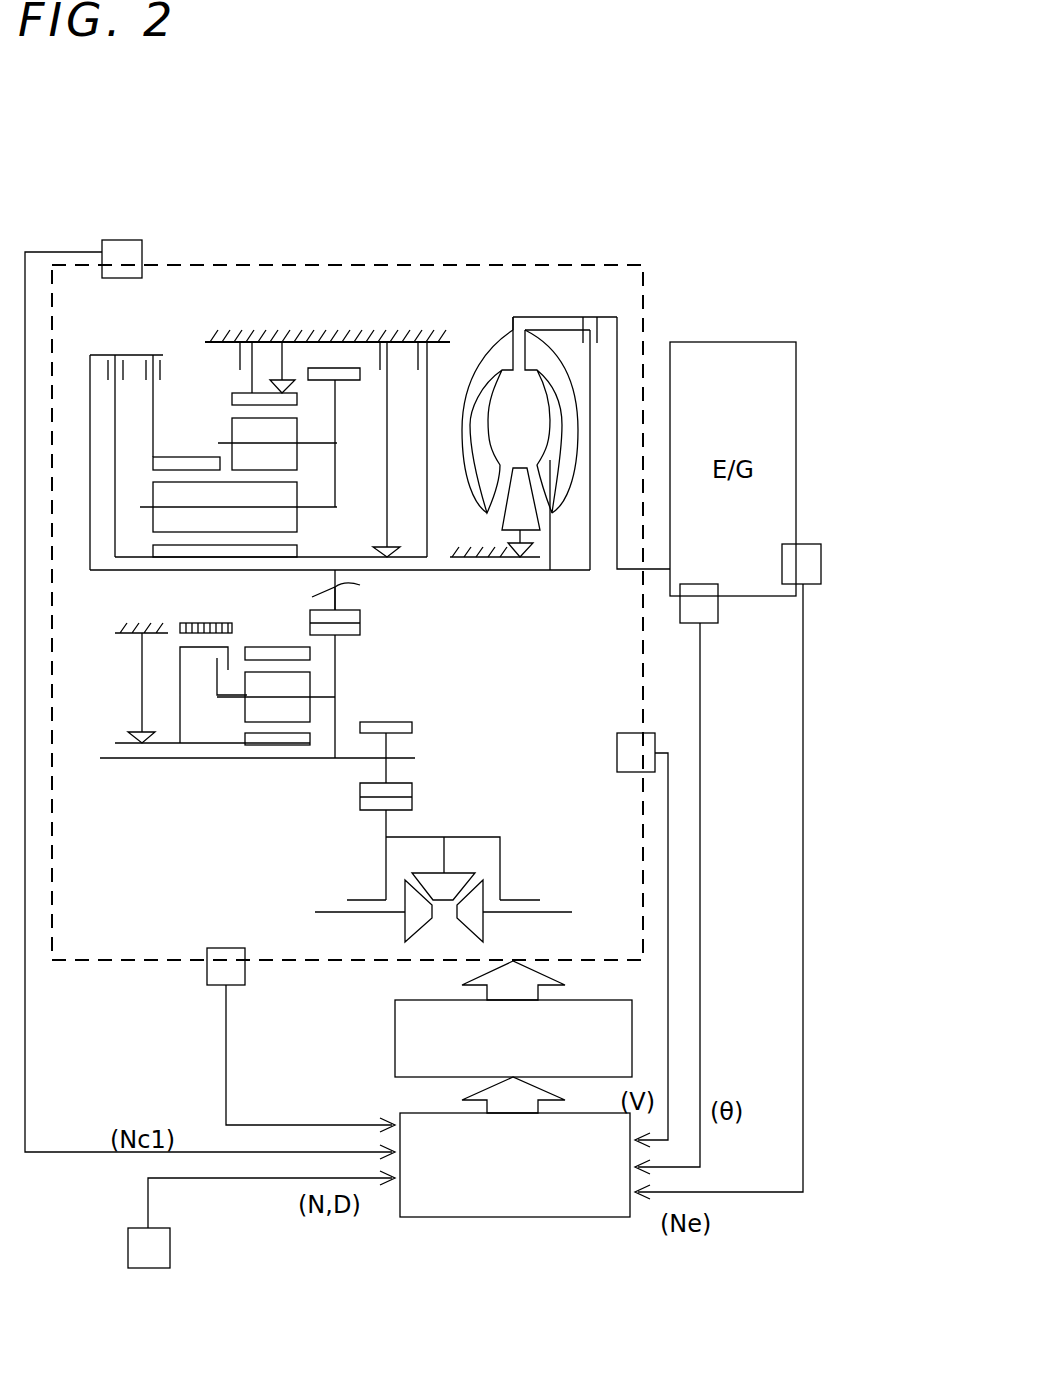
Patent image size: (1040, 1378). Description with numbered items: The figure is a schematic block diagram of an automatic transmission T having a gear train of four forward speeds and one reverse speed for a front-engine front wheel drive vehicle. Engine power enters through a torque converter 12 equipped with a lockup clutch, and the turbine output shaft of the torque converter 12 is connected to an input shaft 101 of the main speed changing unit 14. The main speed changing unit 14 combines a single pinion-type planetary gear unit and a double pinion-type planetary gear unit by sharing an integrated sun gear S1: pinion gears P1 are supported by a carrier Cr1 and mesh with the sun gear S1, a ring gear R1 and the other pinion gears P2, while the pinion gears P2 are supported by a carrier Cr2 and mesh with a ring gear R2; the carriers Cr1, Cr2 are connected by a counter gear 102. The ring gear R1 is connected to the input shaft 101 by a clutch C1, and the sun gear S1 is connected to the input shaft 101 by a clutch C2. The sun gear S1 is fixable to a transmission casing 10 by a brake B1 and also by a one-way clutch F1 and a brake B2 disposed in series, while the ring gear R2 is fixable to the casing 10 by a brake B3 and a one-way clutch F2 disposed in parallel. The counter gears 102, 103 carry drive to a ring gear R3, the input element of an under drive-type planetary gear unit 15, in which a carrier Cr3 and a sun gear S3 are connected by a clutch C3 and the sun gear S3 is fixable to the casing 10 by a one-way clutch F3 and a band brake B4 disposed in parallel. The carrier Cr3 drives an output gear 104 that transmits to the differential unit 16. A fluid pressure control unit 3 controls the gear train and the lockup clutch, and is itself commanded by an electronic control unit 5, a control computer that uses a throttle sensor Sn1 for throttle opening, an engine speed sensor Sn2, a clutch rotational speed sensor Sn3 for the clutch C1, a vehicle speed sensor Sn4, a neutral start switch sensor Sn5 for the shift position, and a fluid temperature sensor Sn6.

The automatic transmission T is at (398, 258).
The transmission casing 10 is at (328, 340).
The main speed changing unit 14 is at (235, 280).
The torque converter 12 is at (487, 340).
The clutch C1 is at (168, 352).
The clutch C2 is at (115, 353).
The clutch C3 is at (214, 658).
The brake B1 is at (437, 345).
The brake B2 is at (386, 423).
The brake B3 is at (244, 346).
The band brake B4 is at (226, 615).
The one-way clutch F1 is at (373, 550).
The one-way clutch F2 is at (290, 345).
The one-way clutch F3 is at (130, 740).
The ring gear R1 is at (180, 457).
The ring gear R2 is at (232, 398).
The ring gear R3 is at (275, 647).
The pinion gears P1 is at (297, 495).
The pinion gears P2 is at (297, 427).
The sun gear S1 is at (167, 572).
The sun gear S3 is at (270, 745).
The carrier Cr1 is at (335, 508).
The carrier Cr2 is at (297, 455).
The carrier Cr3 is at (337, 703).
The input shaft 101 is at (420, 572).
The counter gear 102 is at (360, 618).
The counter gear 103 is at (257, 696).
The output gear 104 is at (412, 727).
The under drive-type planetary gear unit 15 is at (222, 770).
The differential unit 16 is at (487, 815).
The fluid pressure control unit 3 is at (395, 1030).
The electronic control unit 5 is at (452, 1217).
The throttle sensor Sn1 is at (705, 626).
The engine speed sensor Sn2 is at (812, 586).
The clutch C1 rotational speed sensor Sn3 is at (124, 240).
The vehicle speed sensor Sn4 is at (616, 760).
The neutral start switch sensor Sn5 is at (170, 1250).
The fluid temperature sensor Sn6 is at (207, 976).